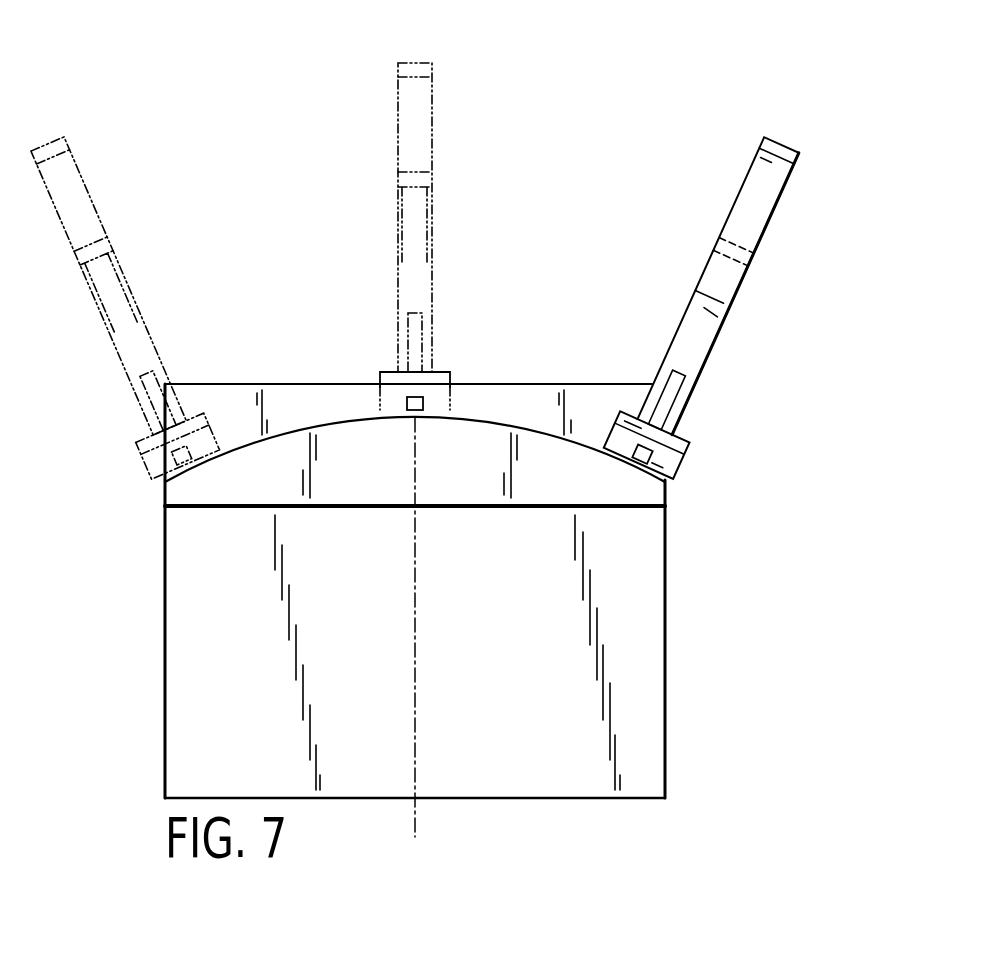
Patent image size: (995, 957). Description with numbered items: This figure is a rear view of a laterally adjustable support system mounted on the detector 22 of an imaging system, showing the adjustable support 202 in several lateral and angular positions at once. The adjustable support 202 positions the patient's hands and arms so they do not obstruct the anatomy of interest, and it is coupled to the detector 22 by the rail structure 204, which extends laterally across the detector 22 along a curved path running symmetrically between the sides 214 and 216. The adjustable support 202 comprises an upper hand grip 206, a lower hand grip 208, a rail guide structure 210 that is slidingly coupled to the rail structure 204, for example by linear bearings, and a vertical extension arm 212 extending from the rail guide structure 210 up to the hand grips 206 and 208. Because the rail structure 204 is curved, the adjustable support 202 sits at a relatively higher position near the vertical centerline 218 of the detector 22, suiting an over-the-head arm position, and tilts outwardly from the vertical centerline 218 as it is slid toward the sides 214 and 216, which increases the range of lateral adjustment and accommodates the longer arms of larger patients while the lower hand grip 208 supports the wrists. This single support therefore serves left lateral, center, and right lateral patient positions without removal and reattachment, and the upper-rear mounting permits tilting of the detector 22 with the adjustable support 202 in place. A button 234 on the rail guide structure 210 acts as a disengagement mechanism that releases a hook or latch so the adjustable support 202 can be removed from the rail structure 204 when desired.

The detector 22 is at (415, 591).
The adjustable support 202 is at (108, 187).
The rail structure 204 is at (188, 488).
The upper hand grip 206 is at (775, 159).
The lower hand grip 208 is at (721, 279).
The rail guide structure 210 is at (647, 445).
The vertical extension arm 212 is at (718, 285).
The side 214 is at (667, 641).
The side 216 is at (163, 746).
The vertical centerline 218 is at (414, 812).
The button 234 is at (649, 458).